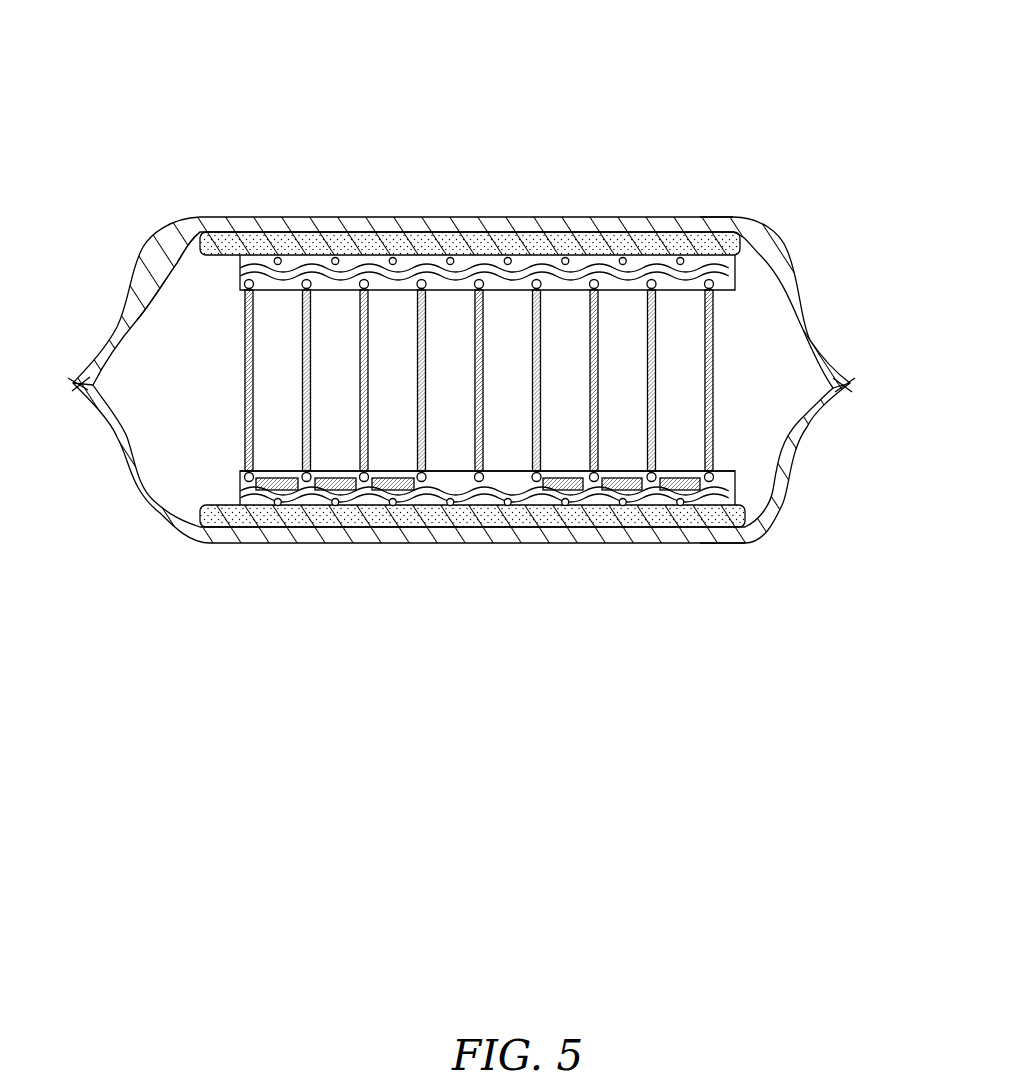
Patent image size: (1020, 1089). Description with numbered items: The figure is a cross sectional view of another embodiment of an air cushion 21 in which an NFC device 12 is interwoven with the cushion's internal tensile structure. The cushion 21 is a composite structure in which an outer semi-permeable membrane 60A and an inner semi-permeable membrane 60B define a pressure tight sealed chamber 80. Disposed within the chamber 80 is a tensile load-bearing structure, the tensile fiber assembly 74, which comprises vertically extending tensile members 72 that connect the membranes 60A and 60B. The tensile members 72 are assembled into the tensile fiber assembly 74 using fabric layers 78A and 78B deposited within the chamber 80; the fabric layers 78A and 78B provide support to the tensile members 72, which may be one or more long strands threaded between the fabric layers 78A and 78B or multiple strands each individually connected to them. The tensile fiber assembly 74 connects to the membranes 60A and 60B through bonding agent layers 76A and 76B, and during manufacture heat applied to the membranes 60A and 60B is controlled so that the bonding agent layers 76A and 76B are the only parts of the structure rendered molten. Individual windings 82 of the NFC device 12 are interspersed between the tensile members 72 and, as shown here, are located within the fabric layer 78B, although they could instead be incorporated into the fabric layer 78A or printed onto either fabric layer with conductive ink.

The NFC device 12 is at (338, 464).
The air cushion 21 is at (281, 213).
The outer semi-permeable membrane 60A is at (557, 217).
The inner semi-permeable membrane 60B is at (607, 543).
The tensile members 72 is at (653, 385).
The tensile fiber assembly 74 is at (236, 359).
The bonding agent layer 76A is at (480, 217).
The bonding agent layer 76B is at (477, 544).
The fabric layer 78A is at (707, 243).
The fabric layer 78B is at (722, 544).
The chamber 80 is at (205, 428).
The windings 82 is at (682, 483).